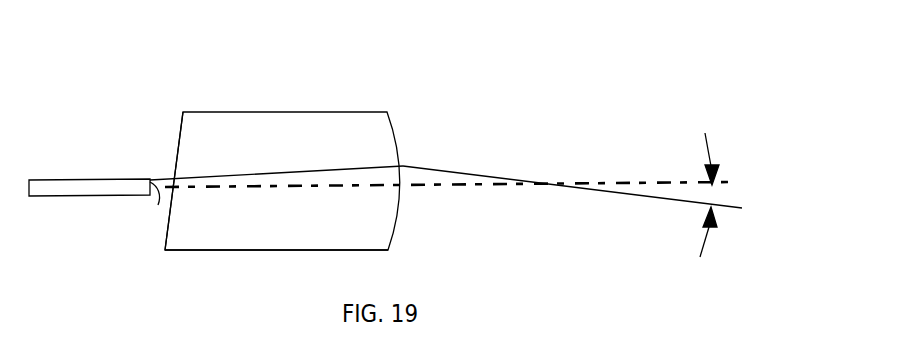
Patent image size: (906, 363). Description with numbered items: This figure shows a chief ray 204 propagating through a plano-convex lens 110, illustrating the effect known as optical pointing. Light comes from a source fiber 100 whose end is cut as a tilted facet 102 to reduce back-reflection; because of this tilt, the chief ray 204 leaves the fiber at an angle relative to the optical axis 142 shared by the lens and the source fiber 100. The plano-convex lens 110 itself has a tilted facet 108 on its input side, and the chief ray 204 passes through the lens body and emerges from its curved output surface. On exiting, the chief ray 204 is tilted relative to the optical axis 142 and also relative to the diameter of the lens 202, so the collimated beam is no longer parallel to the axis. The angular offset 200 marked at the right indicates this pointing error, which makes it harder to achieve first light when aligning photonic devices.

The source fiber 100 is at (62, 178).
The tilted facet 102 is at (158, 205).
The tilted facet 108 is at (176, 131).
The plano-convex lens 110 is at (245, 127).
The optical axis 142 is at (428, 183).
The output beam offset 200 is at (713, 192).
The diameter of the lens 202 is at (245, 255).
The chief ray 204 is at (342, 165).